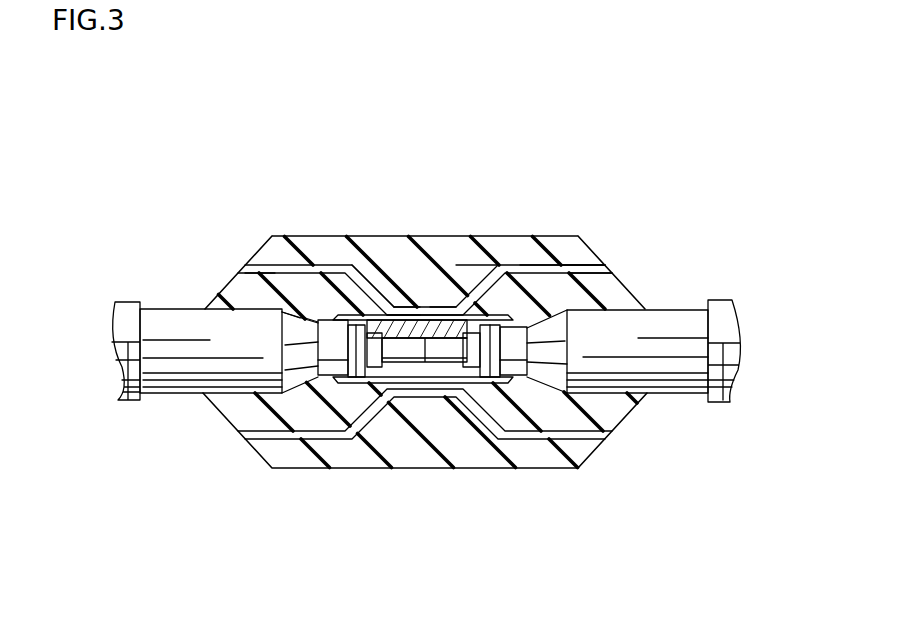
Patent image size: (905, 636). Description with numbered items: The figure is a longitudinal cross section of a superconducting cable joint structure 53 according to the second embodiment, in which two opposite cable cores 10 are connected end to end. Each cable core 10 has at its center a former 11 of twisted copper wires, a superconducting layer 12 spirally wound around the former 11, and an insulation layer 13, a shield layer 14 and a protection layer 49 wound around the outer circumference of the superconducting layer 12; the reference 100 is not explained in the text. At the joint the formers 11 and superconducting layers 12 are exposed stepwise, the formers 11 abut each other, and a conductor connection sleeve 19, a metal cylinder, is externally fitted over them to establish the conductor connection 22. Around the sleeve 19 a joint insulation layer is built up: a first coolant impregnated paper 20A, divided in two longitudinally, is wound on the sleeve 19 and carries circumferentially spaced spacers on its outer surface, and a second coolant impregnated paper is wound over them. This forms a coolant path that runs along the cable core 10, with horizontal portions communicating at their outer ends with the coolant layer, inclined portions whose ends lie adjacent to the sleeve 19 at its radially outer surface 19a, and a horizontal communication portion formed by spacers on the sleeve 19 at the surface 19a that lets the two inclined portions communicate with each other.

The superconducting cable joint structure 53 is at (657, 113).
The first coolant impregnated paper 20A is at (554, 262).
The radially outer surface 19a is at (368, 305).
The conductor connection sleeve 19 is at (347, 323).
The cable core 10 is at (167, 330).
The protection layer 49 is at (127, 352).
The shaft assembly 100 is at (97, 288).
The shield layer 14 is at (215, 377).
The insulation layer 13 is at (312, 385).
The former 11 is at (415, 383).
The conductor connection 22 is at (423, 383).
The superconducting layer 12 is at (370, 380).